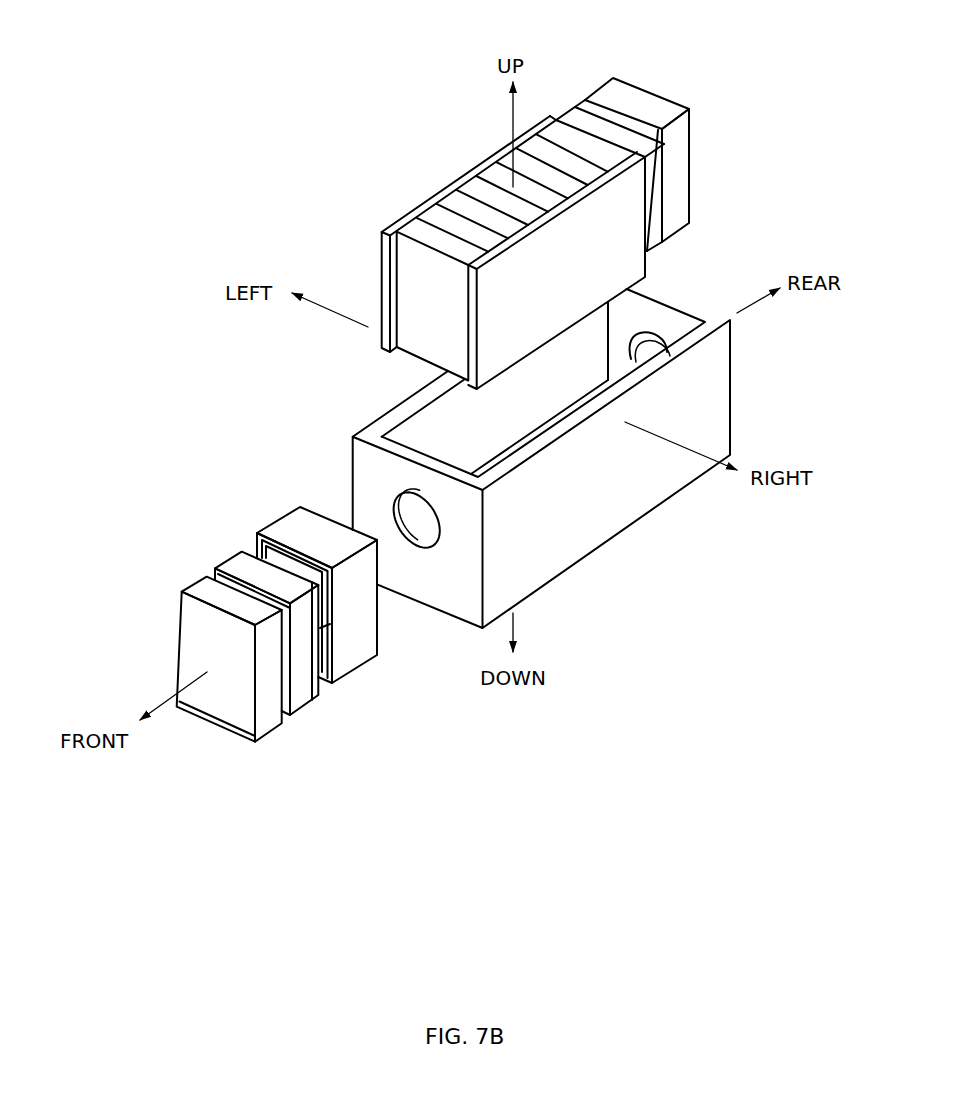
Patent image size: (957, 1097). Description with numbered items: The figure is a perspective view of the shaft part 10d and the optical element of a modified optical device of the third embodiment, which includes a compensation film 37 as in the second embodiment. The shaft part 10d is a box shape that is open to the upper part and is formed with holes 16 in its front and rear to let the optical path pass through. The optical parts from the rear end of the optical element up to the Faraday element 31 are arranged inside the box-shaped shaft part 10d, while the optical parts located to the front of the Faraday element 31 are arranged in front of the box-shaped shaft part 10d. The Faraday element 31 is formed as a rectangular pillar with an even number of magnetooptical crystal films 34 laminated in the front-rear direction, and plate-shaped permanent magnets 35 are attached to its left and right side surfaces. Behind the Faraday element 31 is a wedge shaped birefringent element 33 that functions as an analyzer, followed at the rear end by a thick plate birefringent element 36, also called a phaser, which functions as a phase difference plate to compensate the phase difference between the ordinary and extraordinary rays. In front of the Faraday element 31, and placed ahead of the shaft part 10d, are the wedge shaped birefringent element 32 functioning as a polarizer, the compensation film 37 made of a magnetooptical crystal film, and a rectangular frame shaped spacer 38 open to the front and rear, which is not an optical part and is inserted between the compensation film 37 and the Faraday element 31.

The shaft part 10d is at (388, 396).
The holes 16 is at (650, 340).
The Faraday element 31 is at (512, 146).
The wedge shaped birefringent element 32 is at (220, 642).
The wedge shaped birefringent element 33 is at (598, 123).
The magnetooptical crystal films 34 is at (415, 232).
The permanent magnets 35 is at (386, 258).
The thick plate birefringent element 36 is at (684, 168).
The compensation film 37 is at (242, 567).
The spacer 38 is at (362, 620).